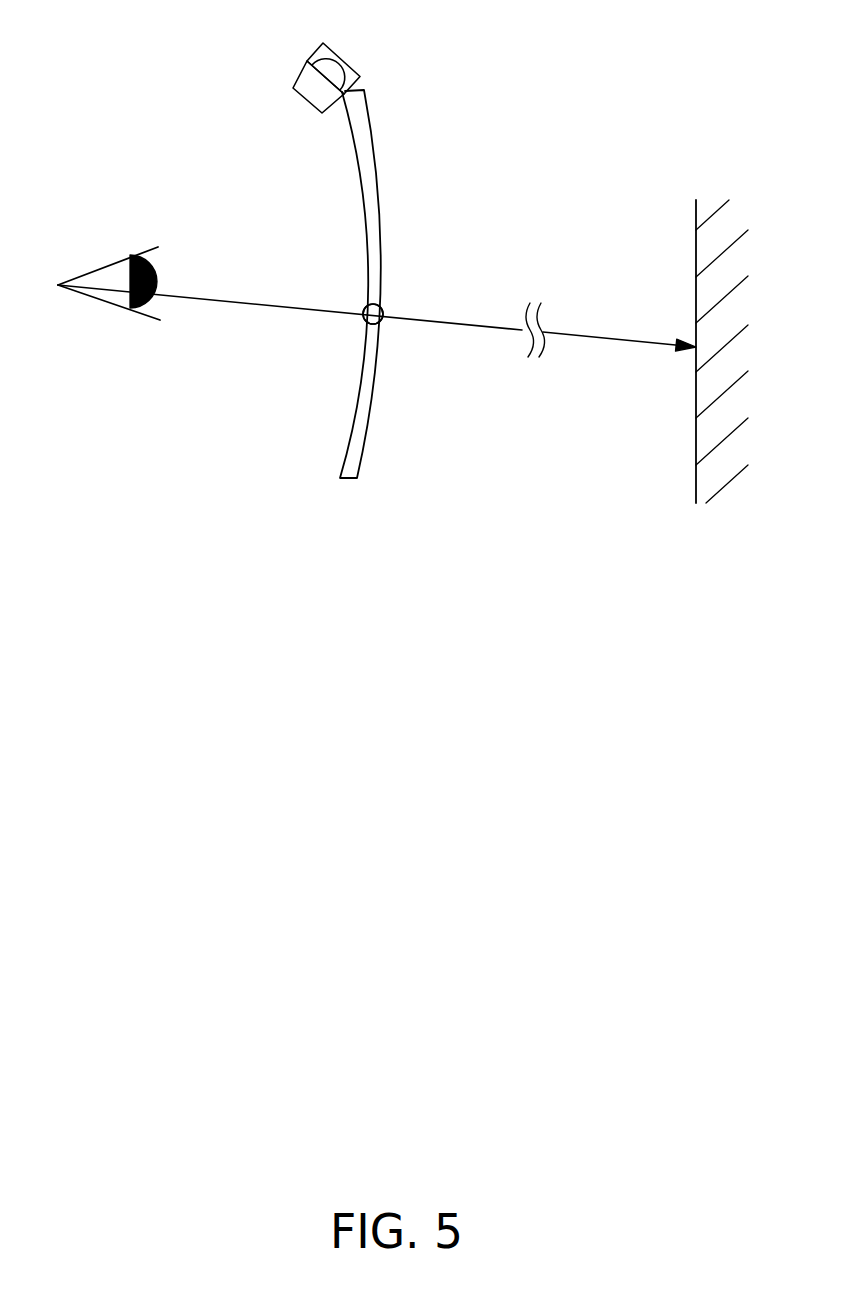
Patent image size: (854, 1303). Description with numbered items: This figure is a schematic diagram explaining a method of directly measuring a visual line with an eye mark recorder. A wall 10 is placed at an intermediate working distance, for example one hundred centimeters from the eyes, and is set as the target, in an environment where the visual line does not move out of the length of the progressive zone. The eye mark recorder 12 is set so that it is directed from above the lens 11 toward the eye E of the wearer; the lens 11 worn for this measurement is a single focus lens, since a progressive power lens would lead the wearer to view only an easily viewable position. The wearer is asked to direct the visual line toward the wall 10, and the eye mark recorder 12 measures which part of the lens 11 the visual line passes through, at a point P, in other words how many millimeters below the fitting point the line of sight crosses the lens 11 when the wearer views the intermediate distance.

The wall 10 is at (696, 447).
The lens 11 is at (376, 195).
The eye mark recorder 12 is at (338, 58).
The eye of observer E is at (136, 267).
The point P on screen P is at (362, 322).